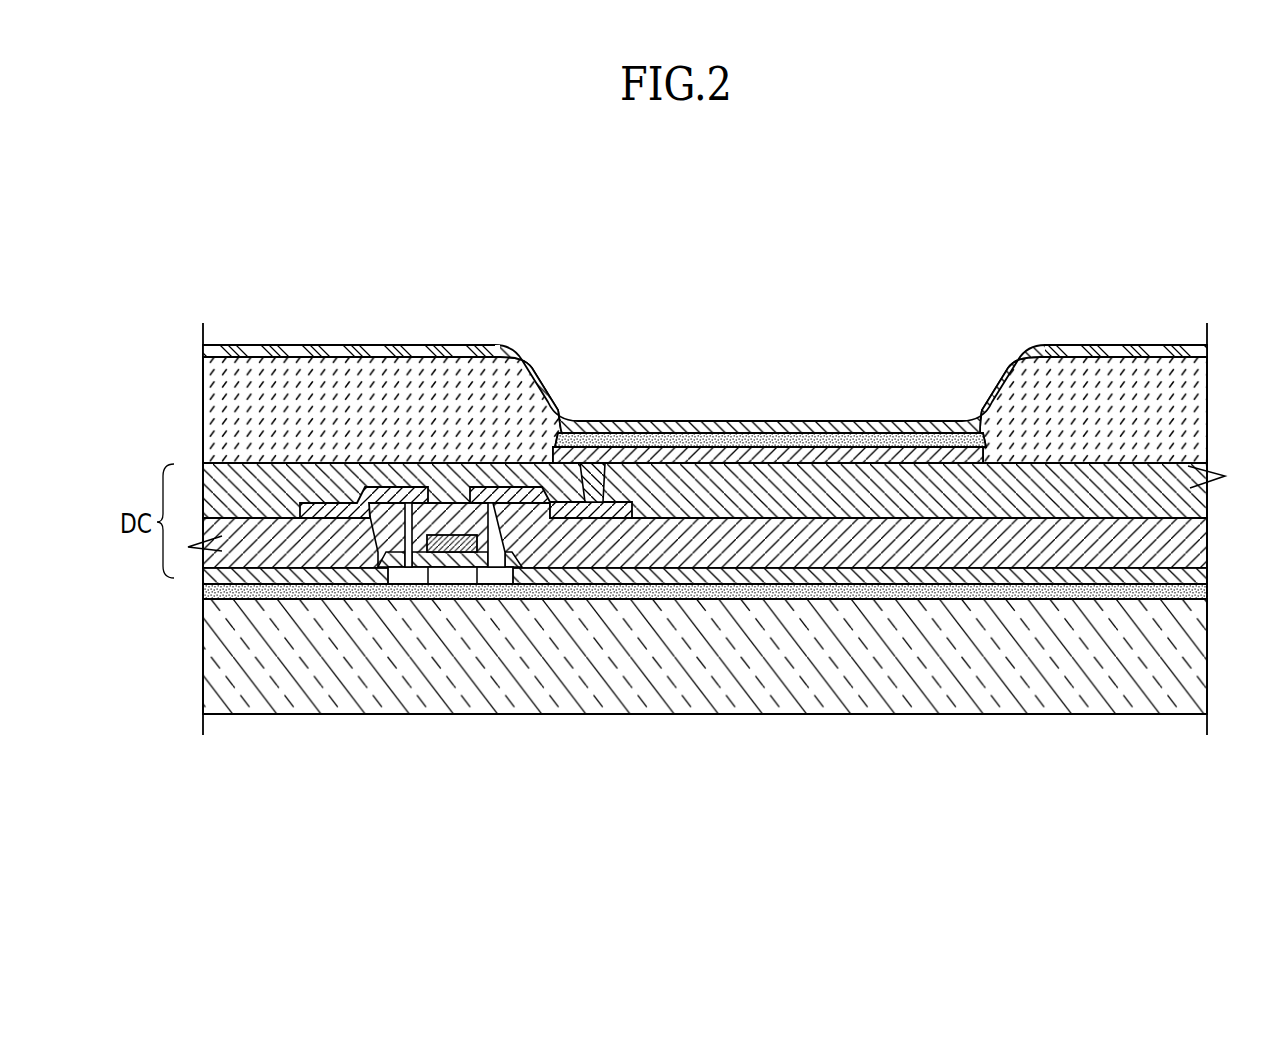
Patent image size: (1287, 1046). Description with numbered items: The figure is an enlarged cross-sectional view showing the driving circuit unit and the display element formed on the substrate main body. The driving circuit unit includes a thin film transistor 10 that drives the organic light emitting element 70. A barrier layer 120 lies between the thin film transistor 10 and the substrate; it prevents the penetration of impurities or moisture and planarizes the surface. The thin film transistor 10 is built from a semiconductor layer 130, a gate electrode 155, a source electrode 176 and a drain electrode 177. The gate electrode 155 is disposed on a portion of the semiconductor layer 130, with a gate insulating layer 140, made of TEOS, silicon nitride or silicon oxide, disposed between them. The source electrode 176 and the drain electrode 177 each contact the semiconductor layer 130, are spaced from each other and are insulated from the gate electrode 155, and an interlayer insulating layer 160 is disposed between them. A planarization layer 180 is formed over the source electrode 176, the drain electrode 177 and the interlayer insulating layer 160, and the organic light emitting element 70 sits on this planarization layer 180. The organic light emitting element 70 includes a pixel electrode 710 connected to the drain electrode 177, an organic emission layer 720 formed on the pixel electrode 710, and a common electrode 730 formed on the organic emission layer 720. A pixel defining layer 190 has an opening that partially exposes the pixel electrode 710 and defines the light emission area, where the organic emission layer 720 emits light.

The thin film transistor 10 is at (466, 663).
The organic light emitting element 70 is at (705, 410).
The barrier layer 120 is at (700, 592).
The semiconductor layer 130 is at (462, 577).
The gate insulating layer 140 is at (778, 570).
The gate electrode 155 is at (447, 545).
The interlayer insulating layer 160 is at (858, 548).
The source electrode 176 is at (332, 508).
The drain electrode 177 is at (583, 503).
The planarization layer 180 is at (938, 490).
The pixel defining layer 190 is at (220, 398).
The pixel electrode 710 is at (682, 455).
The organic emission layer 720 is at (728, 442).
The common electrode 730 is at (675, 358).